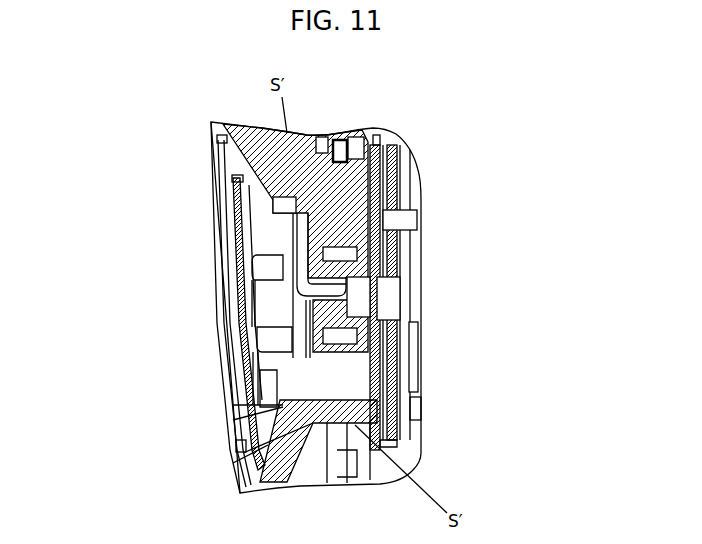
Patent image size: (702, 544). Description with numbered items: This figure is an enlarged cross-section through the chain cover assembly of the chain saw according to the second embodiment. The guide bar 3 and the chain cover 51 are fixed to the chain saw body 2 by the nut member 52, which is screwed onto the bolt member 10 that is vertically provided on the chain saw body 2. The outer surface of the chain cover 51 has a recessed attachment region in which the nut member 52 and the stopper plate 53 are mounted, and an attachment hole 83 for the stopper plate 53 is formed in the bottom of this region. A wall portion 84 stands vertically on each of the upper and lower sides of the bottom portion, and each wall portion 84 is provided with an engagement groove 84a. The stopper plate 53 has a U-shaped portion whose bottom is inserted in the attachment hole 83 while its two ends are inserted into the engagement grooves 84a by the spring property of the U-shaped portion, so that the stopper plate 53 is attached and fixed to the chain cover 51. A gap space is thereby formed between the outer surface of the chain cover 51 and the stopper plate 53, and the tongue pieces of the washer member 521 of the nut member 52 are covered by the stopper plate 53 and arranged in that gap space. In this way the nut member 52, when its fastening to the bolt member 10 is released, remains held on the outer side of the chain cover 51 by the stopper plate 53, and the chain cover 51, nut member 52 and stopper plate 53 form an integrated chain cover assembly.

The chain saw body 2 is at (418, 240).
The guide bar 3 is at (398, 133).
The bolt member 10 is at (255, 297).
The chain cover 51 is at (305, 133).
The nut member 52 is at (250, 345).
The stopper plate 53 is at (290, 235).
The attachment hole 83 is at (413, 357).
The wall portion 84 is at (258, 206).
The engagement groove 84a is at (253, 200).
The washer member 521 is at (395, 182).